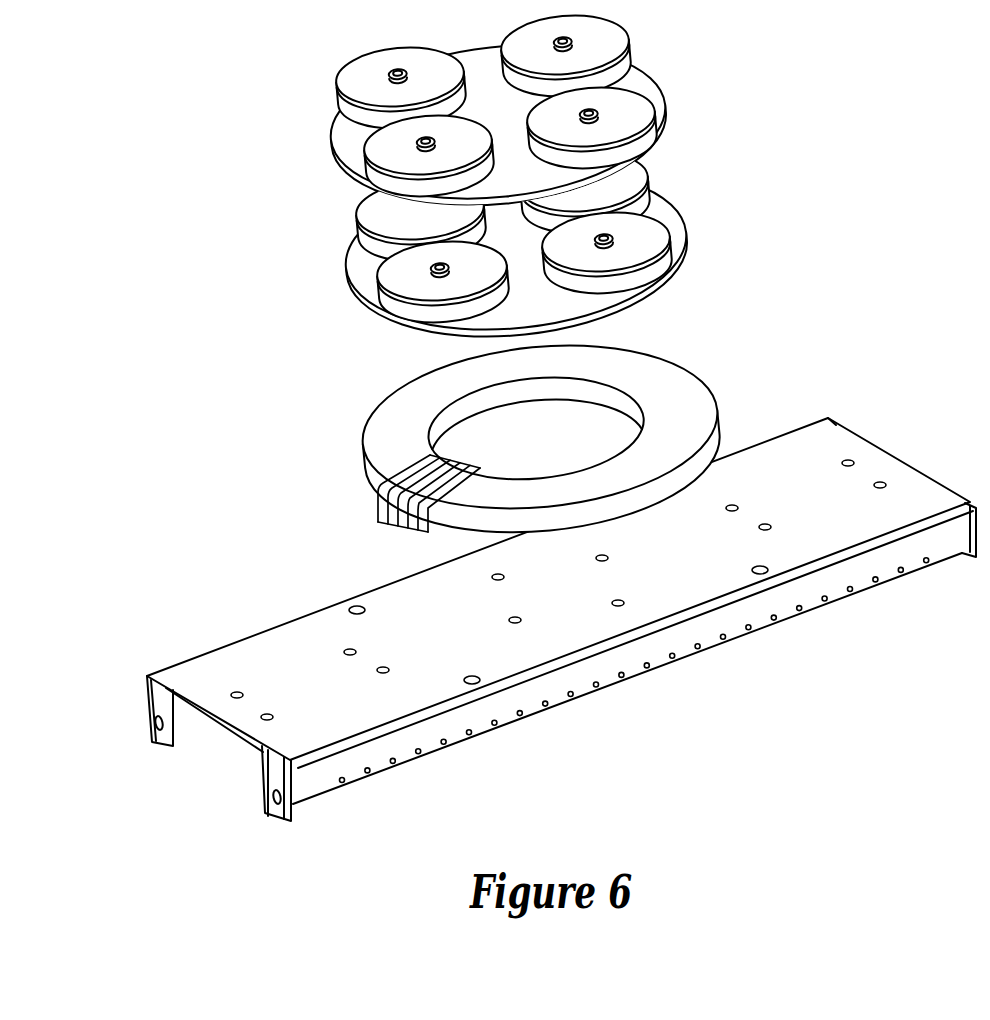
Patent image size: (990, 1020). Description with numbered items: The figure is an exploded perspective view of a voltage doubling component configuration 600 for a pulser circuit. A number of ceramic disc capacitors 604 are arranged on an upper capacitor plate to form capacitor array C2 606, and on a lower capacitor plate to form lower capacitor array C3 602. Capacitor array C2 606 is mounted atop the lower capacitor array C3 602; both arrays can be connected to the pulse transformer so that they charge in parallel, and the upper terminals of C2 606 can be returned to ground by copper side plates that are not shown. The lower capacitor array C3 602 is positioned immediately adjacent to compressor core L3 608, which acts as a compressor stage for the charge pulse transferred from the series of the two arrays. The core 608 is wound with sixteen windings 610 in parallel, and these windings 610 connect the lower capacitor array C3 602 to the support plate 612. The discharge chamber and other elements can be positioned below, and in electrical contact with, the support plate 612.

The magnet assembly 600 is at (108, 832).
The lower capacitor array C3 602 is at (695, 203).
The ceramic disc capacitors 604 is at (348, 83).
The capacitor array C2 606 is at (672, 82).
The compressor core L3 608 is at (697, 385).
The windings 610 is at (382, 487).
The support plate 612 is at (298, 663).